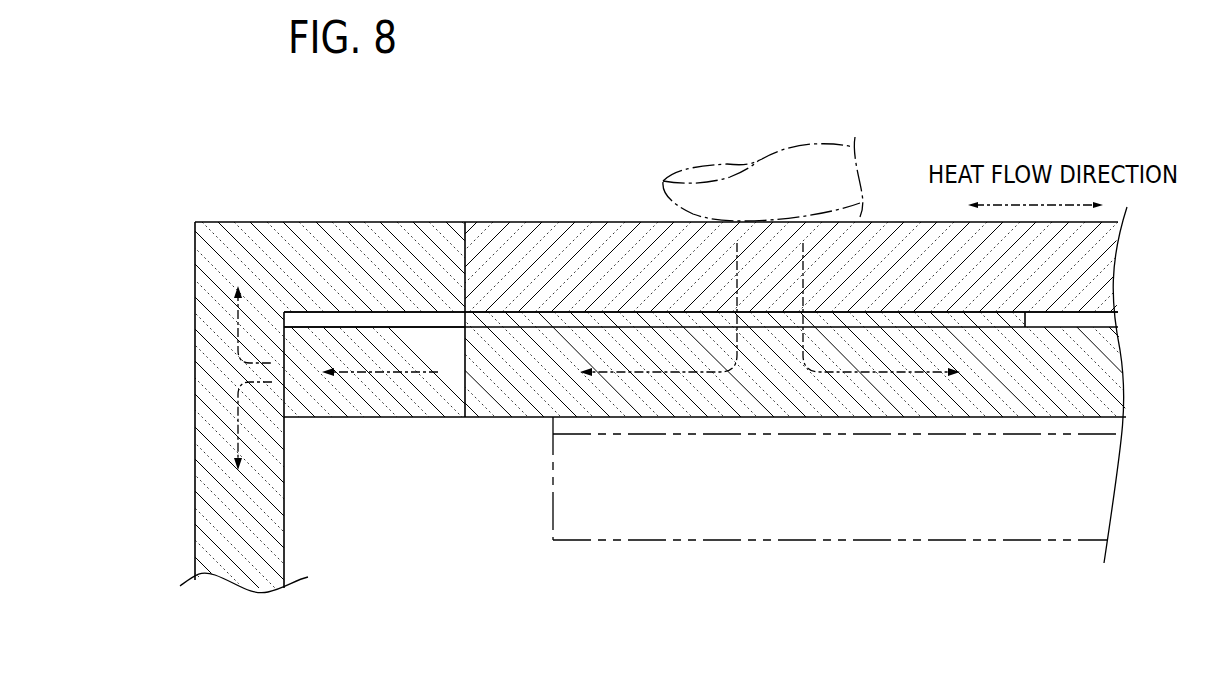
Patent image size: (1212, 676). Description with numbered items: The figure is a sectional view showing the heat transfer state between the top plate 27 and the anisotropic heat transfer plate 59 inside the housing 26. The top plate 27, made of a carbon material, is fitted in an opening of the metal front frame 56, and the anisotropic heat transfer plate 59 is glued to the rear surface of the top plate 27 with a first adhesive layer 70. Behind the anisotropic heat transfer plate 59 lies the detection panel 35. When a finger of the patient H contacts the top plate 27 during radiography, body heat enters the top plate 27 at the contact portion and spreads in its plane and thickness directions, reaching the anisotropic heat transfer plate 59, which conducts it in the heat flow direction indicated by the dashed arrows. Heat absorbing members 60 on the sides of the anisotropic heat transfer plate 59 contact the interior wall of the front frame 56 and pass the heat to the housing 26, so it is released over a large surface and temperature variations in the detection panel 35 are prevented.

The housing 26 is at (347, 222).
The top plate 27 is at (1100, 265).
The detection panel 35 is at (890, 535).
The front frame 56 is at (280, 532).
The anisotropic heat transfer plate 59 is at (1100, 356).
The heat absorbing member 60 is at (352, 402).
The first adhesive layer 70 is at (533, 323).
The patient H is at (783, 154).